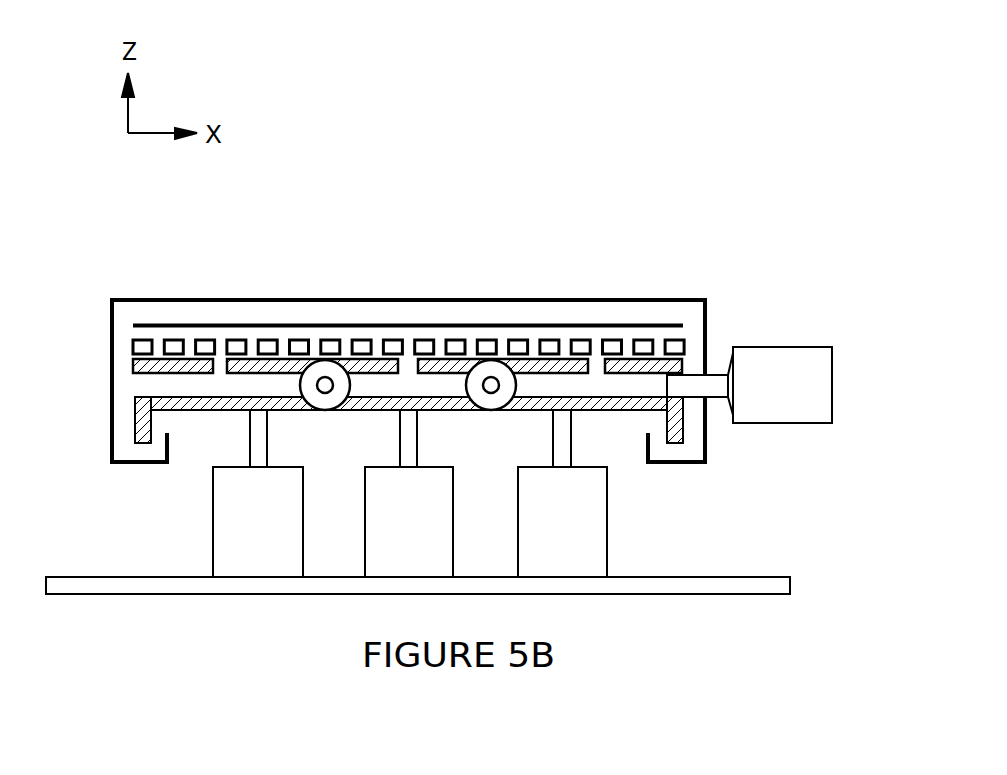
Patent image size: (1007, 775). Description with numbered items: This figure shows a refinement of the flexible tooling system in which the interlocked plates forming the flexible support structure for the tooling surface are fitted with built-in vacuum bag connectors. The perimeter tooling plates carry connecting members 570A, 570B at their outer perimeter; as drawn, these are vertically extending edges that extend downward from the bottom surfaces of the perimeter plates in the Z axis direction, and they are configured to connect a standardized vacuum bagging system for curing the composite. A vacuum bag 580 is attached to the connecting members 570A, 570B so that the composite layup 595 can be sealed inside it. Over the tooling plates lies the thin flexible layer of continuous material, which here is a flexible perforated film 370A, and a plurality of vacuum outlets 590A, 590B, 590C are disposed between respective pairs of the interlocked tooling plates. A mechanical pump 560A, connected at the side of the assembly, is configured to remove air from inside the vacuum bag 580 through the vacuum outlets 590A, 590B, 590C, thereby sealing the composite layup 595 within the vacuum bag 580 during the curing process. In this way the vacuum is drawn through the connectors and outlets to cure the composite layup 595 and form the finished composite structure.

The vacuum bag 580 is at (493, 298).
The composite layup 595 is at (167, 323).
The flexible perforated film 370A is at (643, 348).
The vacuum outlet 590A is at (221, 360).
The vacuum outlet 590B is at (407, 360).
The vacuum outlet 590C is at (597, 360).
The connecting member 570A is at (142, 443).
The connecting member 570B is at (672, 443).
The mechanical pump 560A is at (765, 425).